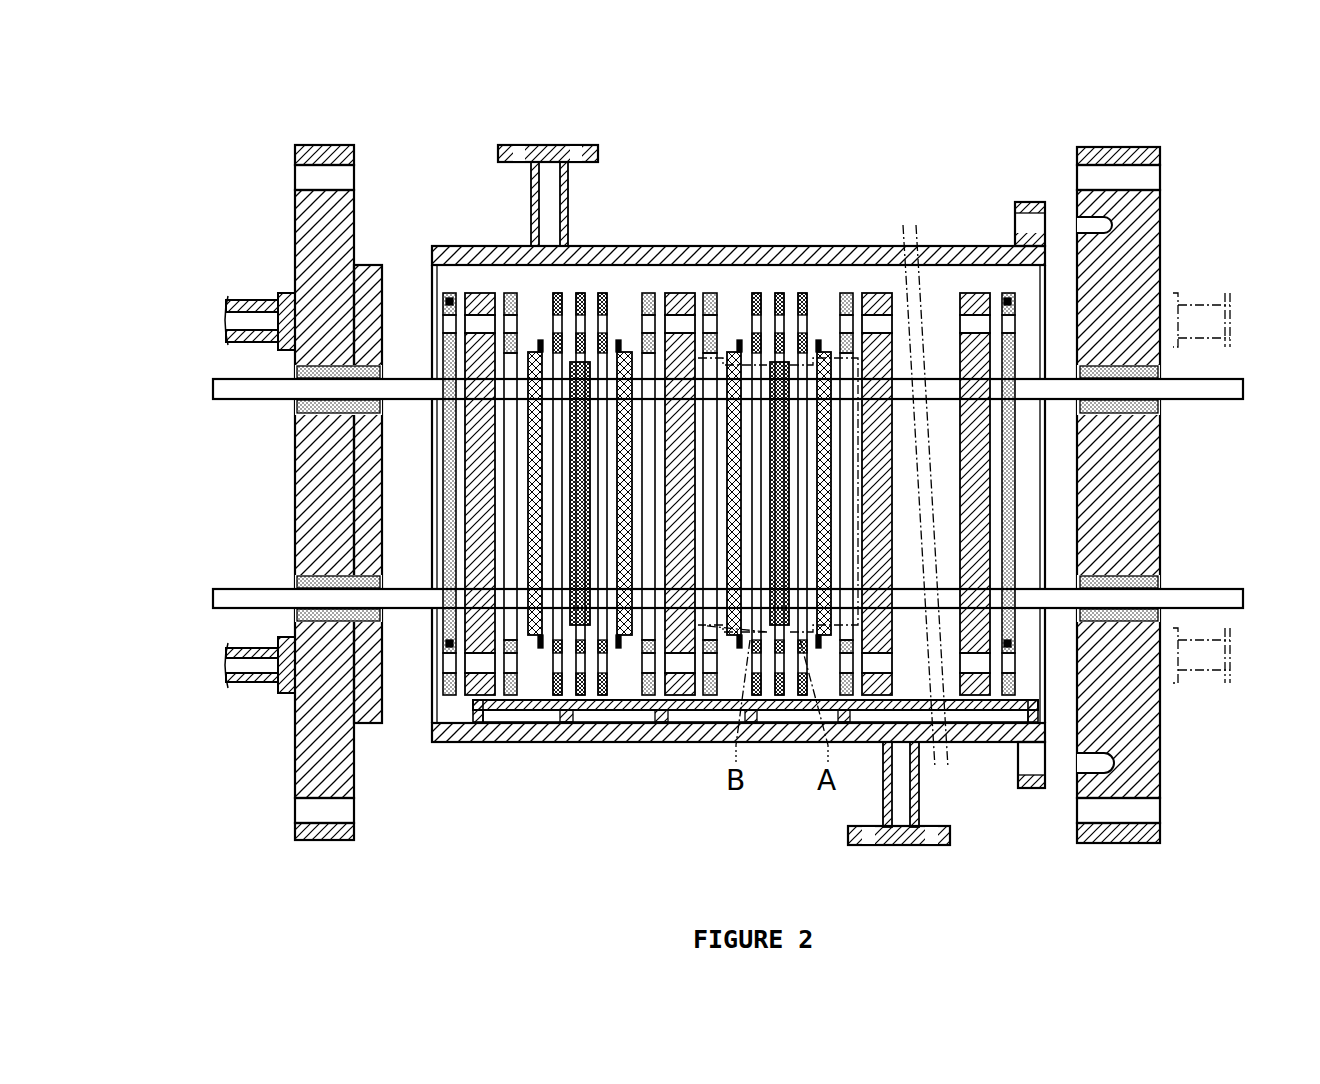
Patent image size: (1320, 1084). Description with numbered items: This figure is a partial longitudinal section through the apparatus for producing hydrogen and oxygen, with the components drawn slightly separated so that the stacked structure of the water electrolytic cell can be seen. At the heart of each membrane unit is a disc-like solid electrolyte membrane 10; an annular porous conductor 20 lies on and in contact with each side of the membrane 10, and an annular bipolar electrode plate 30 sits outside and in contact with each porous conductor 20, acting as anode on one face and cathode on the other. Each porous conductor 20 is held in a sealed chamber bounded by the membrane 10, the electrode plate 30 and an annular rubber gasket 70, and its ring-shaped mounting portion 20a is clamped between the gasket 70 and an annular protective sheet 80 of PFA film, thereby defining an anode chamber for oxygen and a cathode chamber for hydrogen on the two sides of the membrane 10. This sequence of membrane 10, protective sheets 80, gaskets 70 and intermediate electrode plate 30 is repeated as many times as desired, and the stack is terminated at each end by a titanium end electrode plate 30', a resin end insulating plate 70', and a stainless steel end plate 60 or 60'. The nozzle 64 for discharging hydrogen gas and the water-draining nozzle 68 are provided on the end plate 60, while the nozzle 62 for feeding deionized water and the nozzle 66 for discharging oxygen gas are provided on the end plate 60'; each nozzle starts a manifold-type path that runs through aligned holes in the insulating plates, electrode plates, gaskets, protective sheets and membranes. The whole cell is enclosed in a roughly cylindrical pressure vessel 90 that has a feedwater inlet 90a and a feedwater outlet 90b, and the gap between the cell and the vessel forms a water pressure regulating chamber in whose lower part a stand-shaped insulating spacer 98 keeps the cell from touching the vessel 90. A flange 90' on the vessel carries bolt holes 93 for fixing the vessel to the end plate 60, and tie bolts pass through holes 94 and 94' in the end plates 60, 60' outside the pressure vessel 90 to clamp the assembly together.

The solid electrolyte membrane 10 is at (780, 296).
The porous conductor 20 is at (733, 352).
The mounting portion 20a is at (740, 340).
The electrode plate 30 is at (782, 427).
The end electrode plate 30' is at (713, 412).
The end plate 60 is at (1180, 494).
The end plate 60' is at (287, 494).
The nozzle for feeding deionized water 62 is at (258, 680).
The nozzle for discharging hydrogen gas 64 is at (1207, 293).
The nozzle for discharging oxygen gas 66 is at (258, 312).
The water-draining nozzle 68 is at (1210, 683).
The gasket 70 is at (706, 412).
The end insulating plate 70' is at (990, 427).
The protective sheet 80 is at (756, 296).
The pressure vessel 90 is at (738, 415).
The flange 90' is at (1029, 187).
The feedwater inlet 90a is at (850, 836).
The feedwater outlet 90b is at (540, 160).
The bolt holes 93 is at (1030, 763).
The holes 94 is at (1118, 458).
The holes 94' is at (311, 457).
The spacer 98 is at (625, 708).